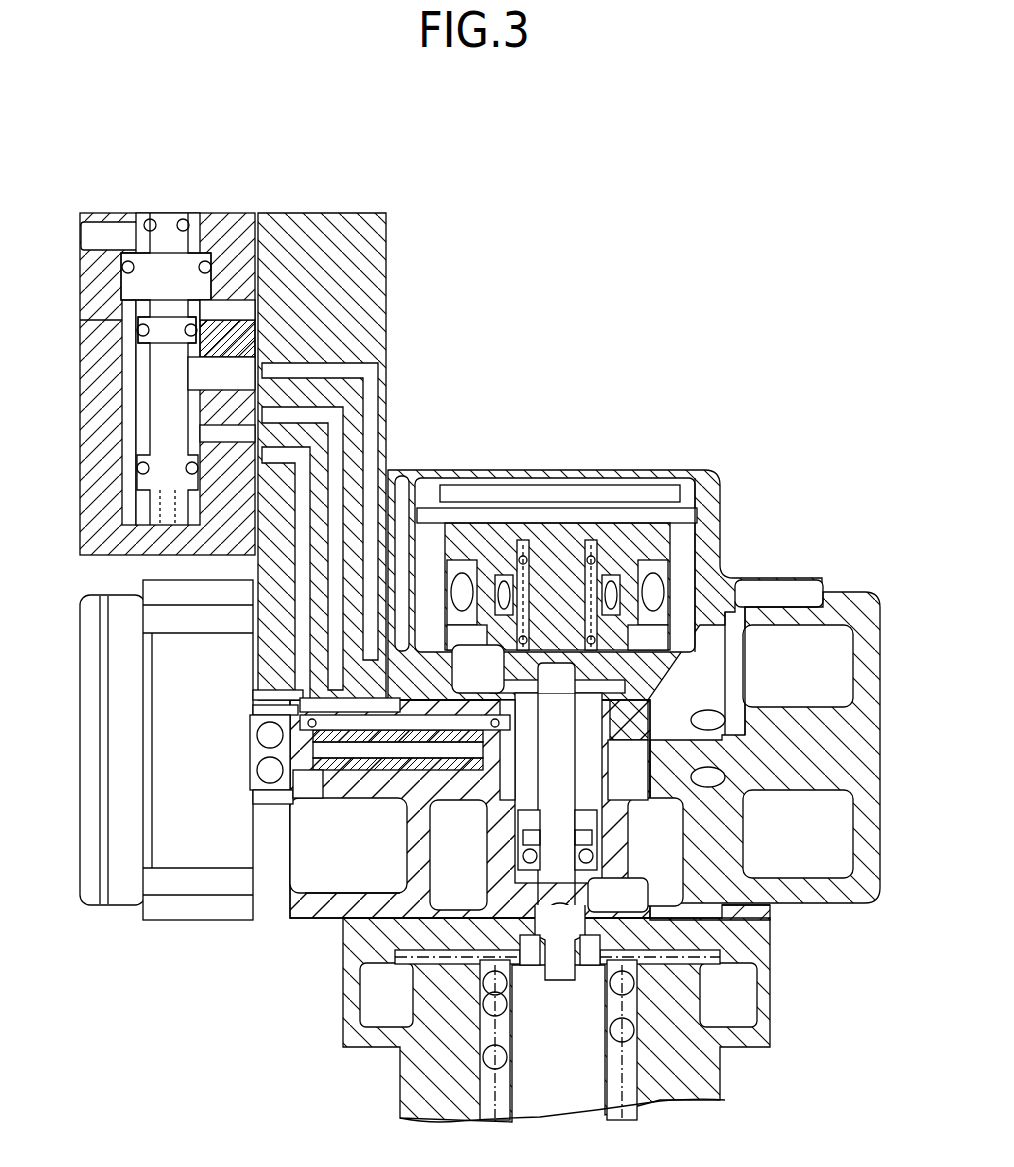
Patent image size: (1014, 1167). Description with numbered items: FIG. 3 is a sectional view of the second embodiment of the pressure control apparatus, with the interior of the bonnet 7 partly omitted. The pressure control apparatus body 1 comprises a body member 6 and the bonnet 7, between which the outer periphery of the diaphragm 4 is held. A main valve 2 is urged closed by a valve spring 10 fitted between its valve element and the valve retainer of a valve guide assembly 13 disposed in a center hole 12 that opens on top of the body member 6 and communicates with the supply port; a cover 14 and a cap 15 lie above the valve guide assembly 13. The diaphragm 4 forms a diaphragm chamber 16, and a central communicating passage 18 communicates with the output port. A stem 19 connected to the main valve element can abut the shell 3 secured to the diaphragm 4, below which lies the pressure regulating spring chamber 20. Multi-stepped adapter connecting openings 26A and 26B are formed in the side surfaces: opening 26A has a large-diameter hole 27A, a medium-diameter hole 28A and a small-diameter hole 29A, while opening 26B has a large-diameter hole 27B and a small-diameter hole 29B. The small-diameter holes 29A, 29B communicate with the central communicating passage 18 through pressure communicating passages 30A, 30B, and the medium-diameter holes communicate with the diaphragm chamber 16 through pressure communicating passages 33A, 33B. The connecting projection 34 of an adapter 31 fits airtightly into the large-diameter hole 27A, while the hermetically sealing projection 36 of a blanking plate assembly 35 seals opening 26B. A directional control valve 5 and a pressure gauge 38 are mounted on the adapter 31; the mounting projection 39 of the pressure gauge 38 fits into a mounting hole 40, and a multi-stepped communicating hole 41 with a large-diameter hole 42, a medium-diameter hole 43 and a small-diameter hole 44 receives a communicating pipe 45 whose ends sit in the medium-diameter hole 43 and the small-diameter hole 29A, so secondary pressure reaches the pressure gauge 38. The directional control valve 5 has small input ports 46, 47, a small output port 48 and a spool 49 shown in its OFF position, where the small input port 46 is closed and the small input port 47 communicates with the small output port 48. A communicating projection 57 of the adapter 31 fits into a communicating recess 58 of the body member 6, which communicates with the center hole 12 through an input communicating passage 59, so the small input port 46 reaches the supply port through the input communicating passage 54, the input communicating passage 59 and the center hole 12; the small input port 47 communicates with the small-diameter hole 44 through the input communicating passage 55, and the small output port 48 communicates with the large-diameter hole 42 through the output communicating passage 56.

The pressure control apparatus body 1 is at (724, 470).
The main valve 2 is at (606, 673).
The shell 3 is at (655, 907).
The diaphragm 4 is at (652, 968).
The directional control valve 5 is at (80, 428).
The body member 6 is at (706, 548).
The bonnet 7 is at (400, 1058).
The valve spring 10 is at (700, 553).
The center hole 12 is at (722, 598).
The valve guide assembly 13 is at (660, 540).
The cover 14 is at (640, 512).
The cap 15 is at (600, 488).
The diaphragm chamber 16 is at (362, 908).
The central communicating passage 18 is at (492, 903).
The stem 19 is at (545, 893).
The pressure regulating spring chamber 20 is at (512, 1094).
The adapter connecting opening 26A is at (450, 774).
The adapter connecting opening 26B is at (708, 712).
The large-diameter hole 27A is at (300, 706).
The large-diameter hole 27B is at (735, 713).
The medium-diameter hole 28A is at (495, 708).
The small-diameter hole 29A is at (503, 760).
The small-diameter hole 29B is at (668, 718).
The pressure communicating passage 30A is at (525, 815).
The pressure communicating passage 30B is at (660, 900).
The adapter 31 is at (400, 224).
The pressure communicating passage 33A is at (420, 851).
The pressure communicating passage 33B is at (652, 797).
The connecting projection 34 is at (418, 770).
The blanking plate assembly 35 is at (868, 590).
The hermetically sealing projection 36 is at (666, 778).
The pressure gauge 38 is at (130, 878).
The mounting projection 39 is at (262, 768).
The mounting hole 40 is at (258, 731).
The multi-stepped communicating hole 41 is at (318, 808).
The large-diameter hole 42 is at (320, 780).
The medium-diameter hole 43 is at (318, 794).
The small-diameter hole 44 is at (270, 802).
The communicating pipe 45 is at (300, 717).
The small input port 46 is at (232, 368).
The small input port 47 is at (215, 453).
The small output port 48 is at (268, 355).
The spool 49 is at (150, 322).
The input communicating passage 54 is at (345, 368).
The input communicating passage 55 is at (300, 457).
The output communicating passage 56 is at (322, 413).
The communicating projection 57 is at (300, 636).
The communicating recess 58 is at (300, 666).
The input communicating passage 59 is at (402, 478).